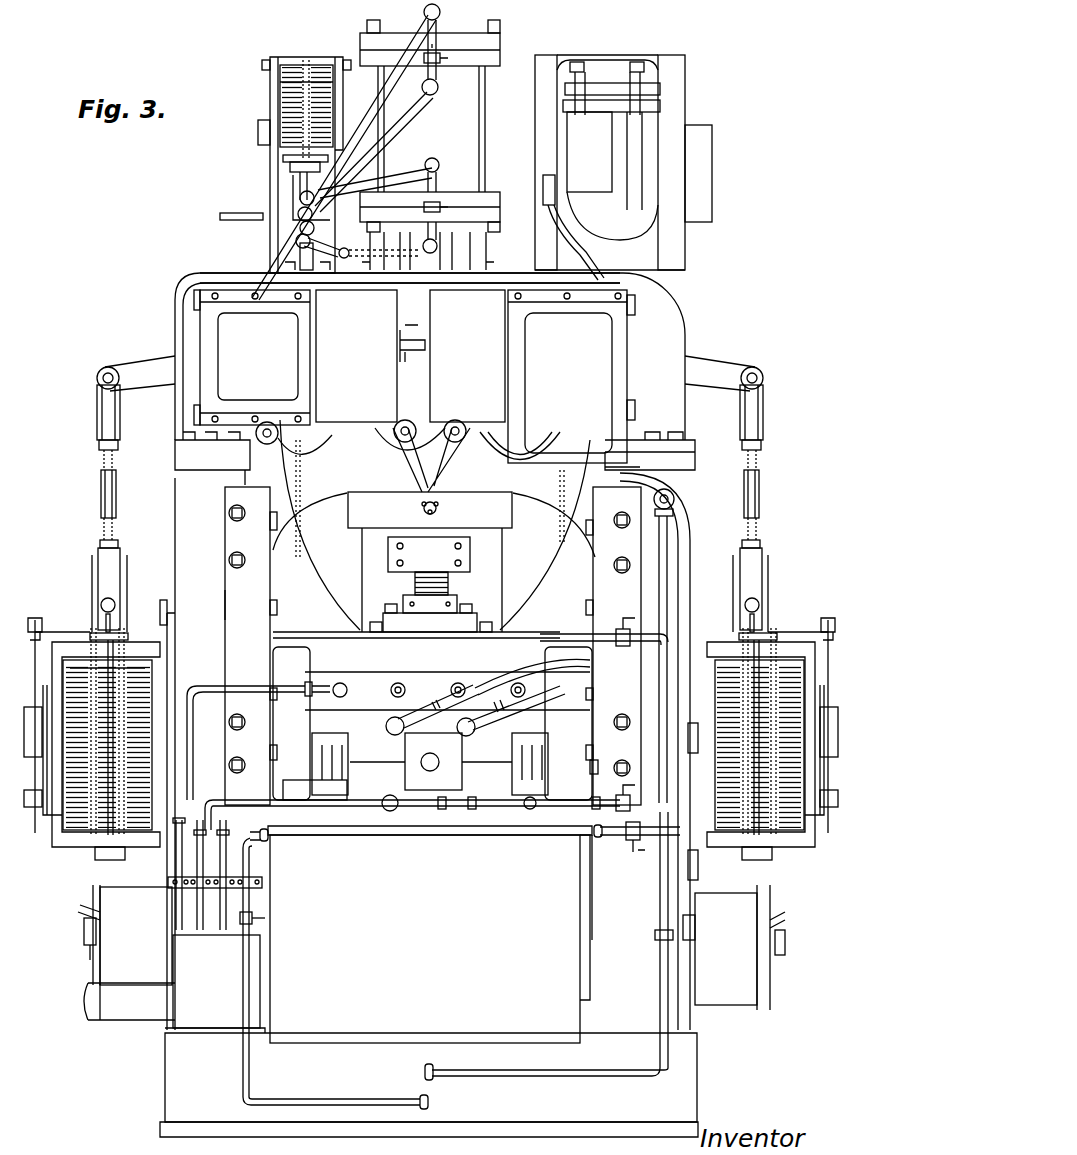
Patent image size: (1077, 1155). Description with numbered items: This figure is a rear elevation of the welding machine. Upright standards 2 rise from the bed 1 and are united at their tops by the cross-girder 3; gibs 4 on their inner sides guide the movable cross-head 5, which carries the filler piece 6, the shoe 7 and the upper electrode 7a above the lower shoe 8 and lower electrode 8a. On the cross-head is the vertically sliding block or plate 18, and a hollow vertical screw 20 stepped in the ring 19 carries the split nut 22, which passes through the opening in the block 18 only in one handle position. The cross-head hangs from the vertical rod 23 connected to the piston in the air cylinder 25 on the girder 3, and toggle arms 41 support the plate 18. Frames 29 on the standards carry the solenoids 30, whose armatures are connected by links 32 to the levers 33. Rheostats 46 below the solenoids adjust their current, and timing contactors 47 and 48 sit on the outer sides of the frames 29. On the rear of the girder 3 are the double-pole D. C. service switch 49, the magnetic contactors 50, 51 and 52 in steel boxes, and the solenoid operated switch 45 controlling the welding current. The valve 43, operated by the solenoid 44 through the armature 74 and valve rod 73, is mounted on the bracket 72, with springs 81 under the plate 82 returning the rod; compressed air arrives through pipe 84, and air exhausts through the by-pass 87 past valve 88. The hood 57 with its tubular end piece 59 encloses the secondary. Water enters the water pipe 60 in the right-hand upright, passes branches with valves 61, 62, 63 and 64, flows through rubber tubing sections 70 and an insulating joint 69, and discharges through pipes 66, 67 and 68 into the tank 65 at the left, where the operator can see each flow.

The bed 1 is at (429, 1085).
The upright standards 2 is at (233, 646).
The cross-girder 3 is at (429, 651).
The gibs 4 is at (237, 605).
The movable cross-head 5 is at (431, 671).
The filler piece 6 is at (322, 682).
The shoe 7 is at (322, 718).
The upper electrode 7a is at (448, 748).
The lower shoe 8 is at (397, 780).
The lower electrode 8a is at (448, 780).
The vertically sliding block or plate 18 is at (430, 562).
The ring 19 is at (465, 616).
The hollow vertical screw 20 is at (414, 585).
The split nut 22 is at (429, 554).
The vertical rod 23 is at (436, 280).
The air cylinder 25 is at (409, 145).
The frames 29 is at (60, 838).
The solenoids 30 is at (85, 835).
The links 32 is at (100, 492).
The levers 33 is at (172, 360).
The toggle arms 41 is at (410, 462).
The valve 43 is at (283, 197).
The solenoid 44 is at (278, 128).
The solenoid operated switch 45 is at (712, 178).
The rheostats 46 is at (431, 952).
The timing contactors 47 is at (836, 750).
The timing contactors 48 is at (30, 750).
The double-pole D. C. service switch 49 is at (370, 356).
The magnetic contactor 50 is at (574, 378).
The magnetic contactor 51 is at (467, 356).
The magnetic contactor 52 is at (252, 357).
The sheet metal hood 57 is at (430, 934).
The tubular end piece 59 is at (605, 912).
The water pipe 60 is at (668, 553).
The valve 61 is at (620, 632).
The valve 62 is at (588, 803).
The valve 63 is at (610, 838).
The valve 64 is at (645, 842).
The tank 65 is at (296, 969).
The discharge pipe 66 is at (178, 905).
The discharge pipe 67 is at (200, 935).
The discharge pipe 68 is at (223, 935).
The insulating joint 69 is at (210, 802).
The sections of tubing 70 is at (200, 686).
The bracket 72 is at (268, 96).
The valve rod 73 is at (300, 258).
The armature 74 is at (300, 178).
The springs 81 is at (282, 80).
The plate 82 is at (305, 60).
The pipe 84 is at (222, 218).
The by-pass 87 is at (440, 18).
The valve 88 is at (438, 76).